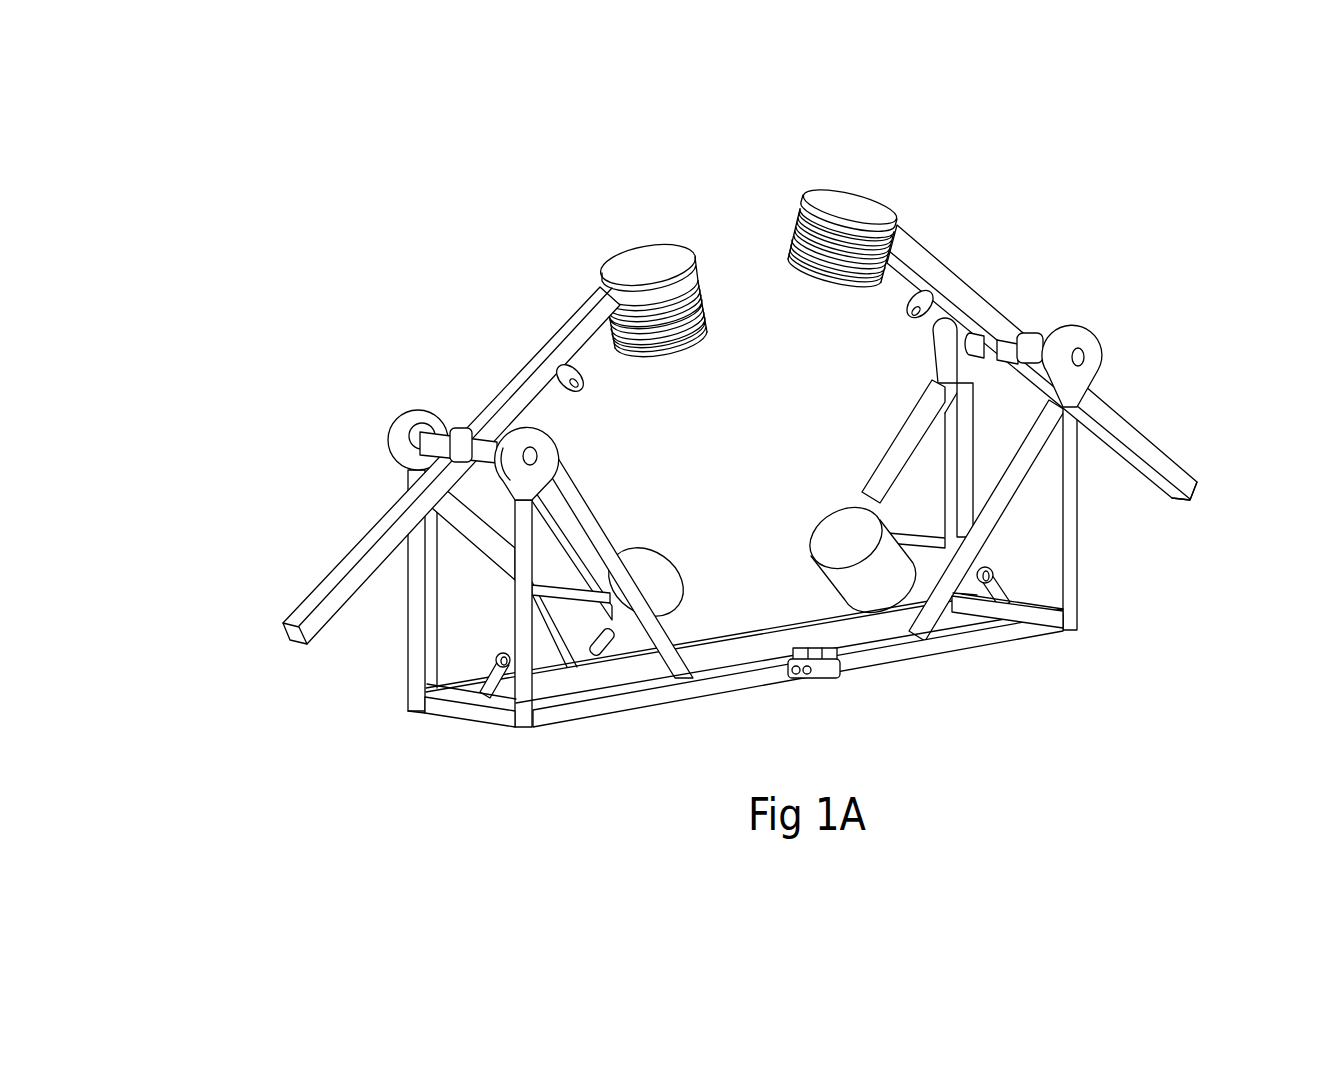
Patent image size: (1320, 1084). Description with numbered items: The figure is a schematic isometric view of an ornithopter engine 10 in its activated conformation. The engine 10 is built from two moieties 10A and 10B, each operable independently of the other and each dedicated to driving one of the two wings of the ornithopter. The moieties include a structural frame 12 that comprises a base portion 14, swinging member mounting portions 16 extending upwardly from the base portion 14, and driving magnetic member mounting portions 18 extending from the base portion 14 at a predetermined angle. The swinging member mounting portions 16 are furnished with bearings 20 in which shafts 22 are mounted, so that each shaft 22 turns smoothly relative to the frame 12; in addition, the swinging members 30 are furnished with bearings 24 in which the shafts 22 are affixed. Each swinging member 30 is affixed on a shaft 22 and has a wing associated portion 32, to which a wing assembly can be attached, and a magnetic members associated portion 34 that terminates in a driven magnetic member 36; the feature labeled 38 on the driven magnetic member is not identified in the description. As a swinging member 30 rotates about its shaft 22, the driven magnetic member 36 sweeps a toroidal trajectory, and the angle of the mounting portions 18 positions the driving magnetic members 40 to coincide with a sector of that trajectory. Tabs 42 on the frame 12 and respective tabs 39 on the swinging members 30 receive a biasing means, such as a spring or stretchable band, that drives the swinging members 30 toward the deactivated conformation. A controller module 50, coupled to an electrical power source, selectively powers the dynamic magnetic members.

The ornithopter engine 10 is at (275, 130).
The moiety 10A is at (316, 280).
The moiety 10B is at (1208, 258).
The structural frame 12 is at (1017, 702).
The base portion 14 is at (876, 660).
The swinging member mounting portions 16 is at (404, 657).
The driving magnetic member mounting portions 18 is at (583, 538).
The bearings 20 is at (538, 455).
The shafts 22 is at (428, 442).
The bearings 24 is at (472, 462).
The swinging members 30 is at (456, 338).
The wing associated portions 32 is at (286, 607).
The magnetic members associated portions 34 is at (572, 310).
The driven magnetic members 36 is at (643, 262).
The threads 38 is at (718, 318).
The tabs 39 is at (585, 383).
The driving magnetic members 40 is at (648, 543).
The tabs 42 is at (498, 665).
The controller module 50 is at (829, 684).